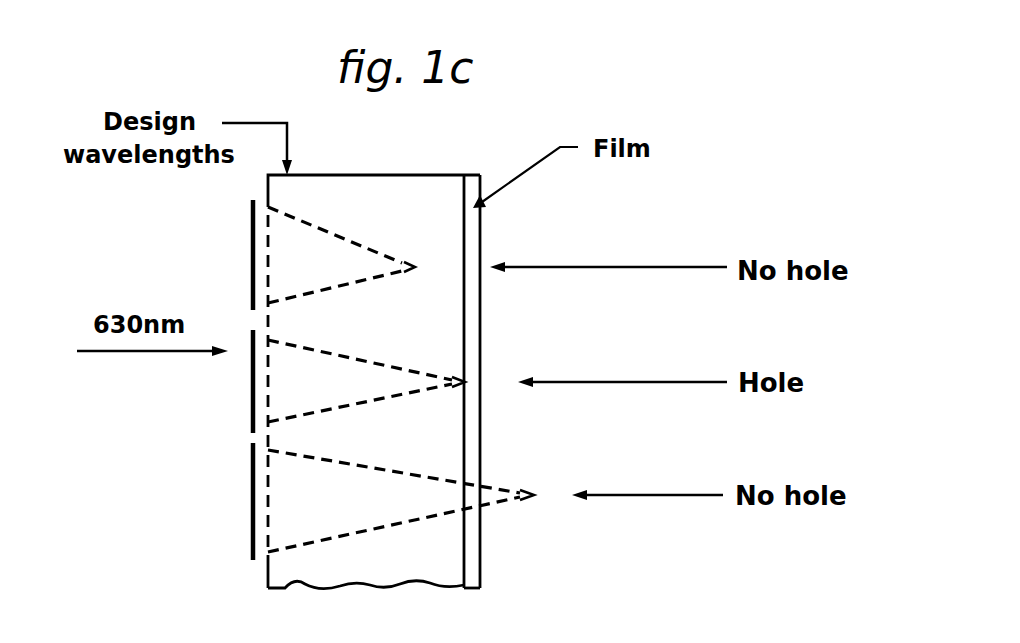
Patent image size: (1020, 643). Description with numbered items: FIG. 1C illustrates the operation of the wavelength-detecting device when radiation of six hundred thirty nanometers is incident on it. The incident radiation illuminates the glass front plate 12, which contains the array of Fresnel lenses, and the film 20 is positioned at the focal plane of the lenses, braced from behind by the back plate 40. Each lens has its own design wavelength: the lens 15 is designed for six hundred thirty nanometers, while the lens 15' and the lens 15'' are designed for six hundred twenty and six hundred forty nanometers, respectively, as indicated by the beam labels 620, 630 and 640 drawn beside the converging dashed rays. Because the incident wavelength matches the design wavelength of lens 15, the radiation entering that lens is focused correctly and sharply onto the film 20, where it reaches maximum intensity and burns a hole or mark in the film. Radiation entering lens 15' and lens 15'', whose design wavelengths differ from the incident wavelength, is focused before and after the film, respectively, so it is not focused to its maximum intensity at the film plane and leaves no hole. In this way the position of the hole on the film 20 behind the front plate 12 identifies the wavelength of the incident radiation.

The glass front plate 12 is at (265, 185).
The lens 15 is at (221, 382).
The lens 15' is at (219, 255).
The lens 15'' is at (221, 513).
The film 20 is at (467, 237).
The back plate 40 is at (473, 332).
The 620 nm design wavelength beam 620 is at (341, 255).
The 630 nm design wavelength beam 630 is at (366, 381).
The 640 nm design wavelength beam 640 is at (401, 501).